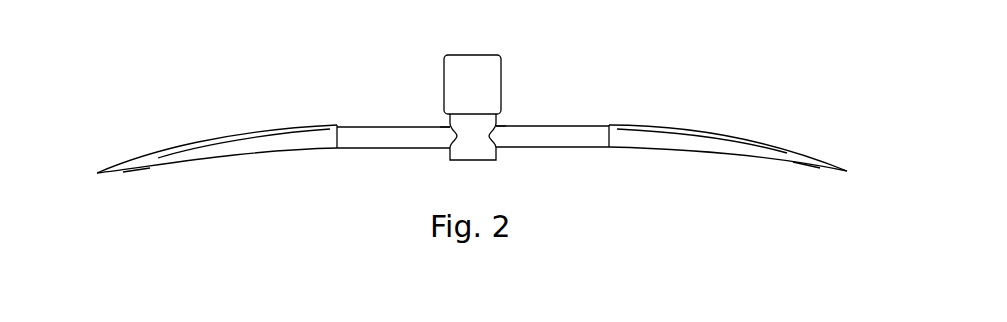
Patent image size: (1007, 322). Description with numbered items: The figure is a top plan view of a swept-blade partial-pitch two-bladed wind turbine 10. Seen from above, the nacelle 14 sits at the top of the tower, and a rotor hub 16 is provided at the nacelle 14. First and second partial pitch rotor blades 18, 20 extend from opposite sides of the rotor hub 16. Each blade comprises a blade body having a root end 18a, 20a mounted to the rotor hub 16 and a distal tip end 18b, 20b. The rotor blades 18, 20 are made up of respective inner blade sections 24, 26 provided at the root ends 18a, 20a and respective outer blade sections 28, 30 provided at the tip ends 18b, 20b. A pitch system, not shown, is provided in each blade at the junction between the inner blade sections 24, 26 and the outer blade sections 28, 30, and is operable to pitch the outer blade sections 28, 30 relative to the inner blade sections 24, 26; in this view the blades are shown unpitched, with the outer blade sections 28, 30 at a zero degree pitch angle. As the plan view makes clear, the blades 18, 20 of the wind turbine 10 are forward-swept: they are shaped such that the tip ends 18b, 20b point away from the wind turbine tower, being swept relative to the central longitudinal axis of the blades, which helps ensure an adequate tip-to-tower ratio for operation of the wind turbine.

The wind turbine 10 is at (253, 68).
The nacelle 14 is at (478, 67).
The rotor hub 16 is at (478, 152).
The first partial pitch rotor blade 18 is at (253, 195).
The root end 18a is at (435, 163).
The tip end 18b is at (93, 185).
The second partial pitch rotor blade 20 is at (743, 203).
The root end 20a is at (510, 108).
The tip end 20b is at (848, 183).
The inner blade section 24 is at (380, 132).
The inner blade section 26 is at (573, 132).
The outer blade section 28 is at (222, 142).
The outer blade section 30 is at (753, 152).